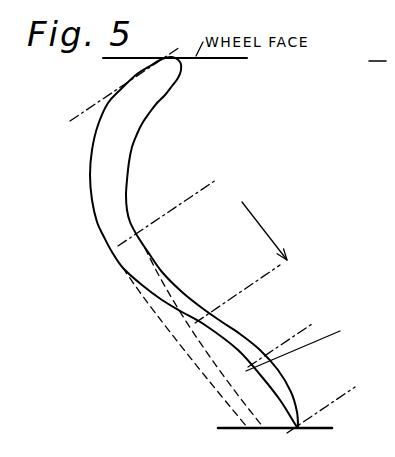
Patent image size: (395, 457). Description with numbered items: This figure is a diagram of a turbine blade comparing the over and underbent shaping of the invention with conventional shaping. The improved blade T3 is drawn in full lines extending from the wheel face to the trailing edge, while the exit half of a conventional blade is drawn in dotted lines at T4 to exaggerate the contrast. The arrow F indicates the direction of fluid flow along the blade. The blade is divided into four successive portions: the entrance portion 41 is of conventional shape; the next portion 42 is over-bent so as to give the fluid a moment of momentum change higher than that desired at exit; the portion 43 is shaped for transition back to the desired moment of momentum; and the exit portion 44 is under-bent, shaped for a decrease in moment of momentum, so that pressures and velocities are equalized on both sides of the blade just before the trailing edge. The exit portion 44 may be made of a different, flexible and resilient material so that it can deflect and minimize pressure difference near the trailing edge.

The entrance portion 41 is at (128, 82).
The over-bent portion 42 is at (261, 278).
The transition portion 43 is at (298, 333).
The exit portion 44 is at (298, 333).
The fluid flow direction arrow F is at (252, 213).
The over and underbent turbine blade T3 is at (304, 346).
The conventional turbine blade T4 is at (233, 398).